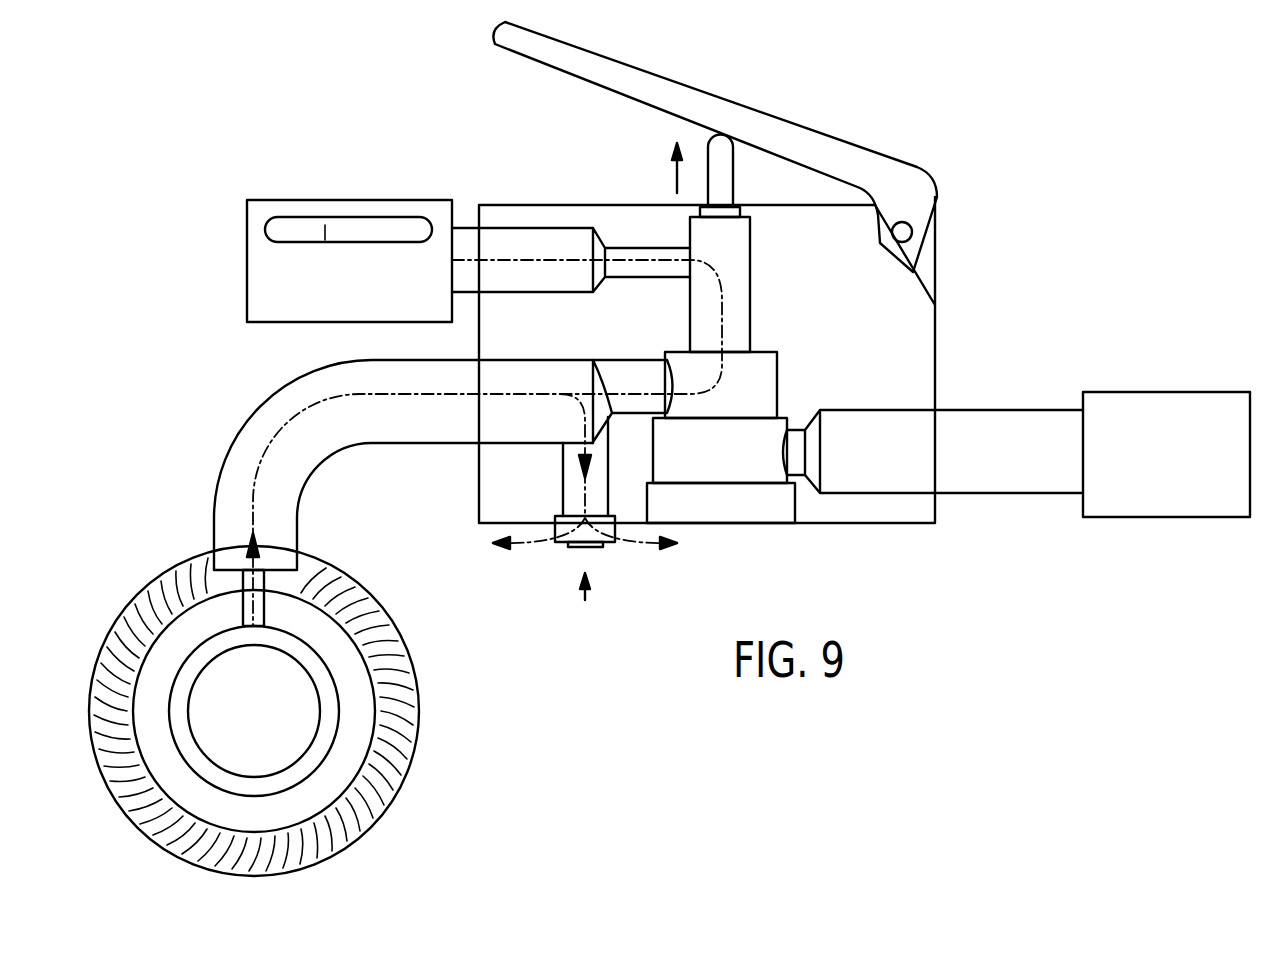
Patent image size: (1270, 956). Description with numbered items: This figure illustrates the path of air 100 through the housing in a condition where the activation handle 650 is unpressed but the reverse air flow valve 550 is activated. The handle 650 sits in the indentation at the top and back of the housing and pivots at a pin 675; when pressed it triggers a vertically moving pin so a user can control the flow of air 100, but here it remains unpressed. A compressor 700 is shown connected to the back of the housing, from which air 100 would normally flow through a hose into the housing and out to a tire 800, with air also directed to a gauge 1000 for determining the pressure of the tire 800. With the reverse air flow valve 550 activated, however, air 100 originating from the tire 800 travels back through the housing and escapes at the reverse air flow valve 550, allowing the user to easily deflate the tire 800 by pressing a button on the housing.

The air flow 100 is at (288, 438).
The reverse air flow valve 550 is at (592, 547).
The handle 650 is at (867, 167).
The pin 675 is at (912, 232).
The compressor 700 is at (1158, 503).
The tire 800 is at (385, 692).
The gauge 1000 is at (275, 217).